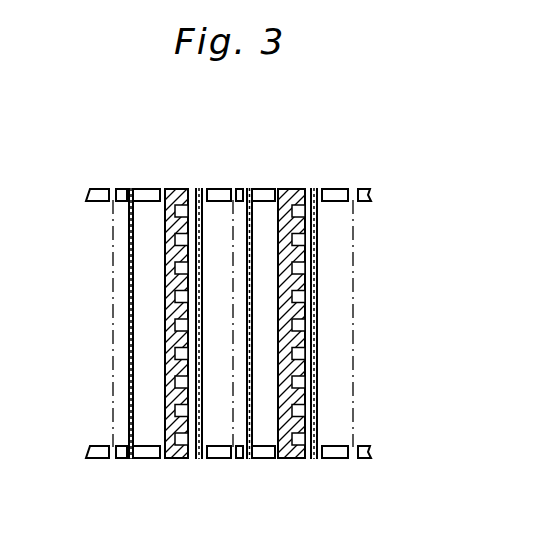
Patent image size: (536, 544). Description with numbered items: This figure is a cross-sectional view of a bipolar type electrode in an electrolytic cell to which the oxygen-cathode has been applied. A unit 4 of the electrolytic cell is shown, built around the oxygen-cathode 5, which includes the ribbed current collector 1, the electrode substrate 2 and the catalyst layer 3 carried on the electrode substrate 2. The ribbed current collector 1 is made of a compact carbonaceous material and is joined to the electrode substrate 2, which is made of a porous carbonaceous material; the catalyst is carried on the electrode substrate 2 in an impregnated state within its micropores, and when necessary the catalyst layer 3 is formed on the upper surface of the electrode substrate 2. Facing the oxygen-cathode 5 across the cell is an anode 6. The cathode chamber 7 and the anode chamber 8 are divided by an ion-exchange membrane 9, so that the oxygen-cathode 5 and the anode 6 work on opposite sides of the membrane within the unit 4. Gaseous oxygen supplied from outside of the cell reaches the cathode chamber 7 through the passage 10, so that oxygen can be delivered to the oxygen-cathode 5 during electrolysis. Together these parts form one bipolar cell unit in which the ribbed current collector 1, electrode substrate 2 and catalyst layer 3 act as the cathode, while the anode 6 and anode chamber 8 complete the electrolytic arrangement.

The ribbed current collector 1 is at (163, 383).
The electrode substrate 2 is at (197, 341).
The catalyst layer 3 is at (197, 447).
The unit of an electrolytic cell 4 is at (276, 140).
The oxygen-cathode 5 is at (196, 322).
The anode 6 is at (250, 433).
The cathode chamber 7 is at (220, 226).
The anode chamber 8 is at (261, 227).
The ion-exchange membrane 9 is at (224, 438).
The passage of gaseous oxygen 10 is at (184, 353).